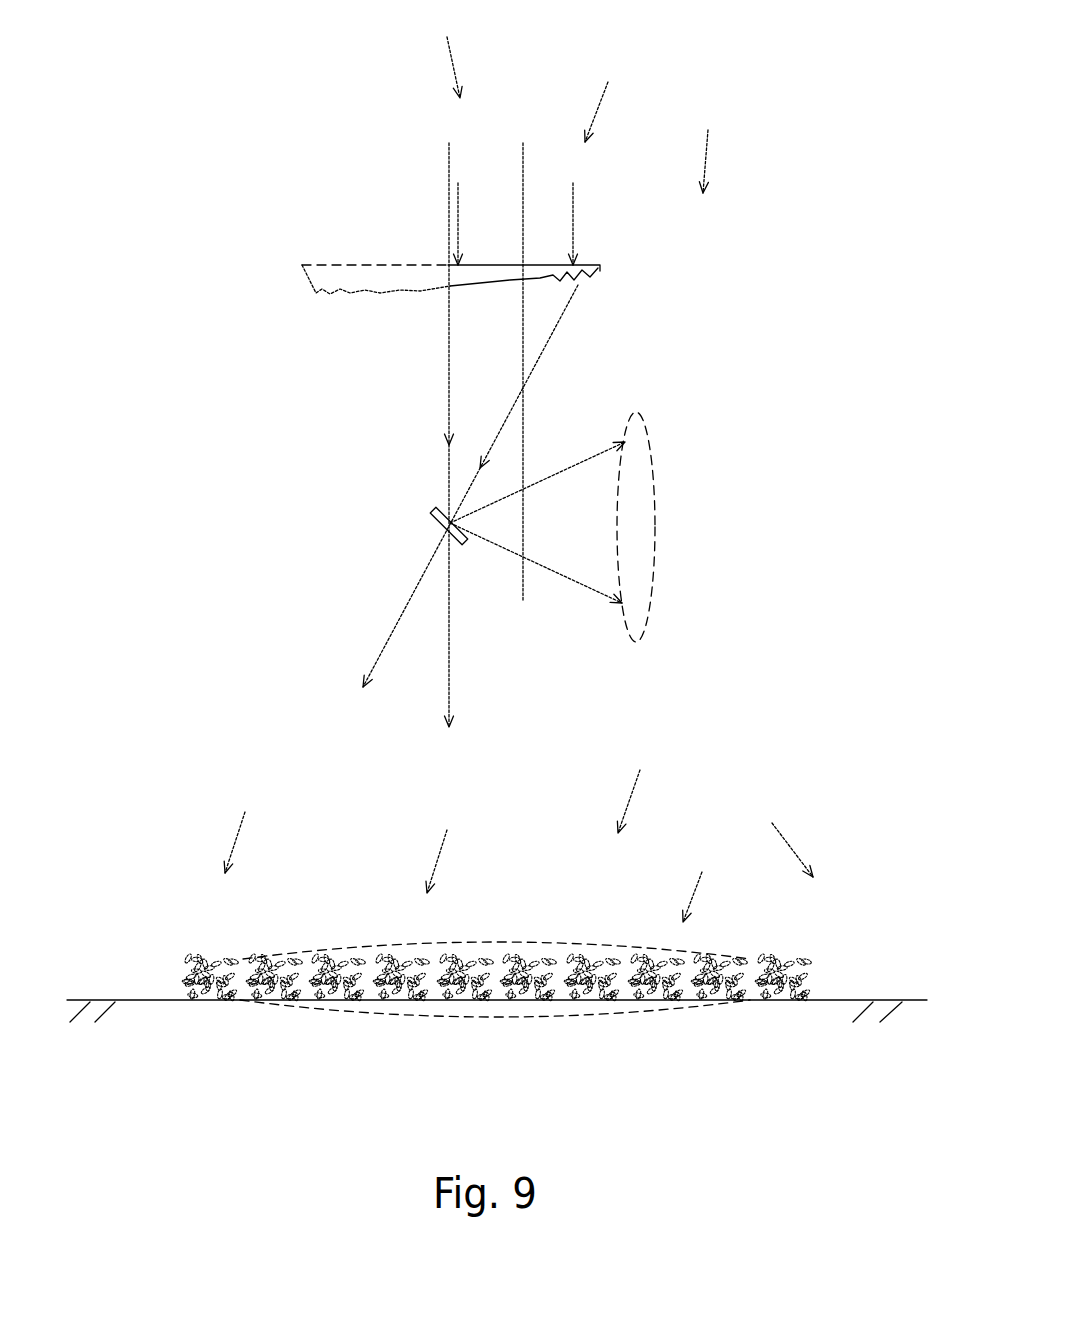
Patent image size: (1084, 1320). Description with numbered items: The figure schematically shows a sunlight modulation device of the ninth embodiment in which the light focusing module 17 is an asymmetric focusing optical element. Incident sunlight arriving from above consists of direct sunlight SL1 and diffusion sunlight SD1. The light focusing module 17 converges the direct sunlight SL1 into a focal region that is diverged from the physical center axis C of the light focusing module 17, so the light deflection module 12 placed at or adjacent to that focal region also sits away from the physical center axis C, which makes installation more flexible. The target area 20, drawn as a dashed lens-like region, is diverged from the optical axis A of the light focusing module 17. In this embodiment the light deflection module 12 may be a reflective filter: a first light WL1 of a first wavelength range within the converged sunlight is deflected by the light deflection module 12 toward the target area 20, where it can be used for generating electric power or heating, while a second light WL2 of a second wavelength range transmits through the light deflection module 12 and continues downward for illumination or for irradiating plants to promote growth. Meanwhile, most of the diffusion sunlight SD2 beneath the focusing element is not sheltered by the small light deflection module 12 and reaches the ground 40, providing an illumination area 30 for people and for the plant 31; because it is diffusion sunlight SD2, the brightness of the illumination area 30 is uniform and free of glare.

The light focusing module 17 is at (600, 267).
The direct sunlight SL1 is at (573, 218).
The optical axis A is at (449, 425).
The physical center axis C is at (522, 362).
The light deflection module 12 is at (440, 528).
The second light WL2 is at (397, 628).
The first light WL1 is at (590, 590).
The target area 20 is at (652, 480).
The diffusion sunlight SD1 is at (452, 74).
The diffusion sunlight SD2 is at (235, 845).
The ground 40 is at (848, 1000).
The illumination area 30 is at (573, 1017).
The plant 31 is at (530, 956).